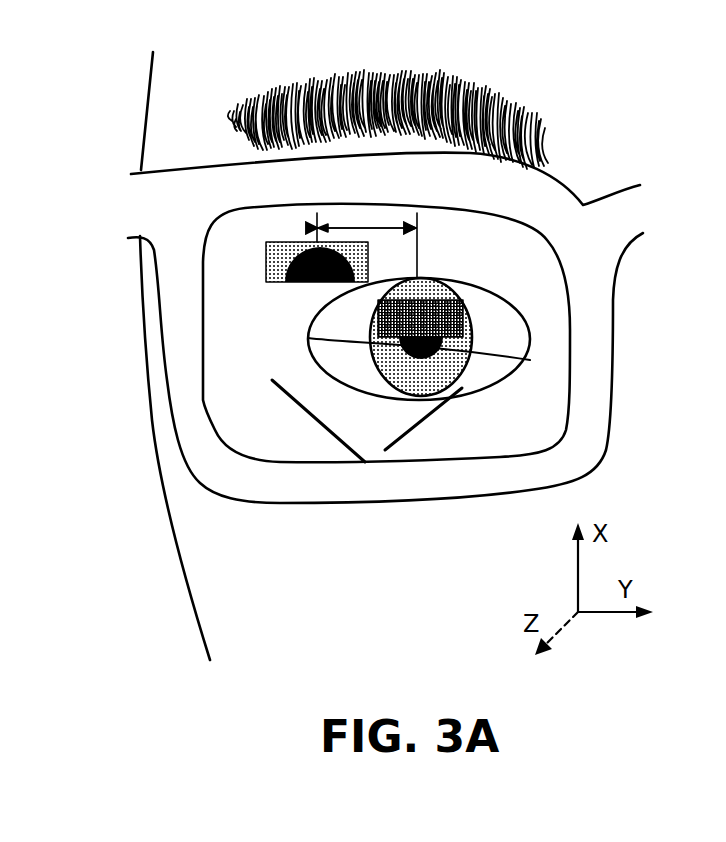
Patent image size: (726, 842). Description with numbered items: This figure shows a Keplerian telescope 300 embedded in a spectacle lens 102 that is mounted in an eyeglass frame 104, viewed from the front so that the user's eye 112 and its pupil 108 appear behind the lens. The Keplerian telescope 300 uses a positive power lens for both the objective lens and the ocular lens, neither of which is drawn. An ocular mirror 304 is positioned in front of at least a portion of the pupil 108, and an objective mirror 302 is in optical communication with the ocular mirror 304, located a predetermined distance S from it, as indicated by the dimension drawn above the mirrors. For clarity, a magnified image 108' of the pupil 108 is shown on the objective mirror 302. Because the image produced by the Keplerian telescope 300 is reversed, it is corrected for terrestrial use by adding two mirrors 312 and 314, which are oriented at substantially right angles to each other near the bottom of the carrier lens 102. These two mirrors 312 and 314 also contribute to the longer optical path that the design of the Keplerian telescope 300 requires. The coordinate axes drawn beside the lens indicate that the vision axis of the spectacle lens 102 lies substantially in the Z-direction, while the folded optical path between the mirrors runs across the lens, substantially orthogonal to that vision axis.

The Keplerian telescope 300 is at (450, 251).
The objective mirror 302 is at (267, 262).
The ocular mirror 304 is at (453, 300).
The eyeglass frame 104 is at (590, 283).
The spectacle lens 102 is at (386, 333).
The pupil 108 is at (506, 339).
The magnified image of the pupil 108' is at (206, 284).
The user's eye 112 is at (308, 338).
The first image-reversing mirror 312 is at (307, 413).
The second image-reversing mirror 314 is at (410, 430).